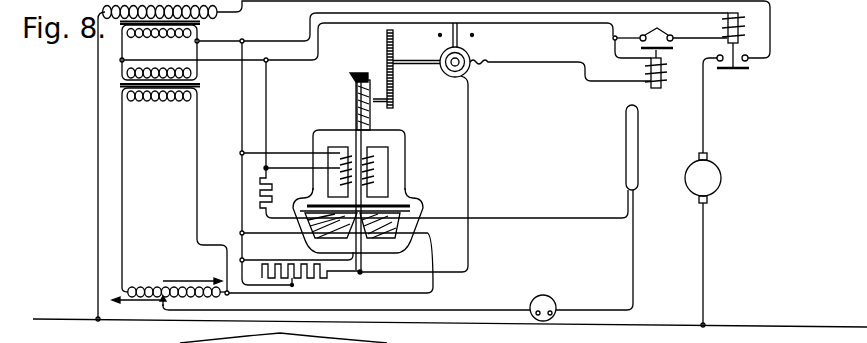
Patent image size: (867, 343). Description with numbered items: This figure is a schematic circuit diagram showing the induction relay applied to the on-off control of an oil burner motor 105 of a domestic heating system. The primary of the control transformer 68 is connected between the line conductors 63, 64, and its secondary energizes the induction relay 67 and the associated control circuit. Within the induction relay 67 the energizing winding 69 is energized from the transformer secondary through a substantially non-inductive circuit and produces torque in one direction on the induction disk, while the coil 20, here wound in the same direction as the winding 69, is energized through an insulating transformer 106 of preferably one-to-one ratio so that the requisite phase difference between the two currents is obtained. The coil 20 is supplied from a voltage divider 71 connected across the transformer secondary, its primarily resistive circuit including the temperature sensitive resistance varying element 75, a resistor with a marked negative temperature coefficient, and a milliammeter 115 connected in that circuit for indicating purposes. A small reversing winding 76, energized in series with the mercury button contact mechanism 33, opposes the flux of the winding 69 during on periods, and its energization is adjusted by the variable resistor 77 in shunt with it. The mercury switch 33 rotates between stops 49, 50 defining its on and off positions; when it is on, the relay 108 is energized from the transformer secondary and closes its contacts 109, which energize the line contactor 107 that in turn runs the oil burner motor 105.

The line conductor 63 is at (287, 2).
The control transformer 68 is at (201, 22).
The insulating transformer 106 is at (200, 86).
The stop 49 is at (432, 35).
The stop 50 is at (473, 35).
The mercury button contact mechanism 33 is at (451, 76).
The contacts 109 is at (658, 27).
The relay 108 is at (663, 56).
The line contactor 107 is at (736, 54).
The induction relay 67 is at (432, 152).
The temperature sensitive resistance varying element 75 is at (625, 145).
The oil burner motor 105 is at (722, 186).
The reversing winding 76 is at (307, 212).
The energizing winding 69 is at (340, 233).
The coil 20 is at (375, 230).
The variable resistor 77 is at (330, 276).
The voltage divider 71 is at (143, 287).
The line conductor 64 is at (53, 318).
The milliammeter 115 is at (551, 298).